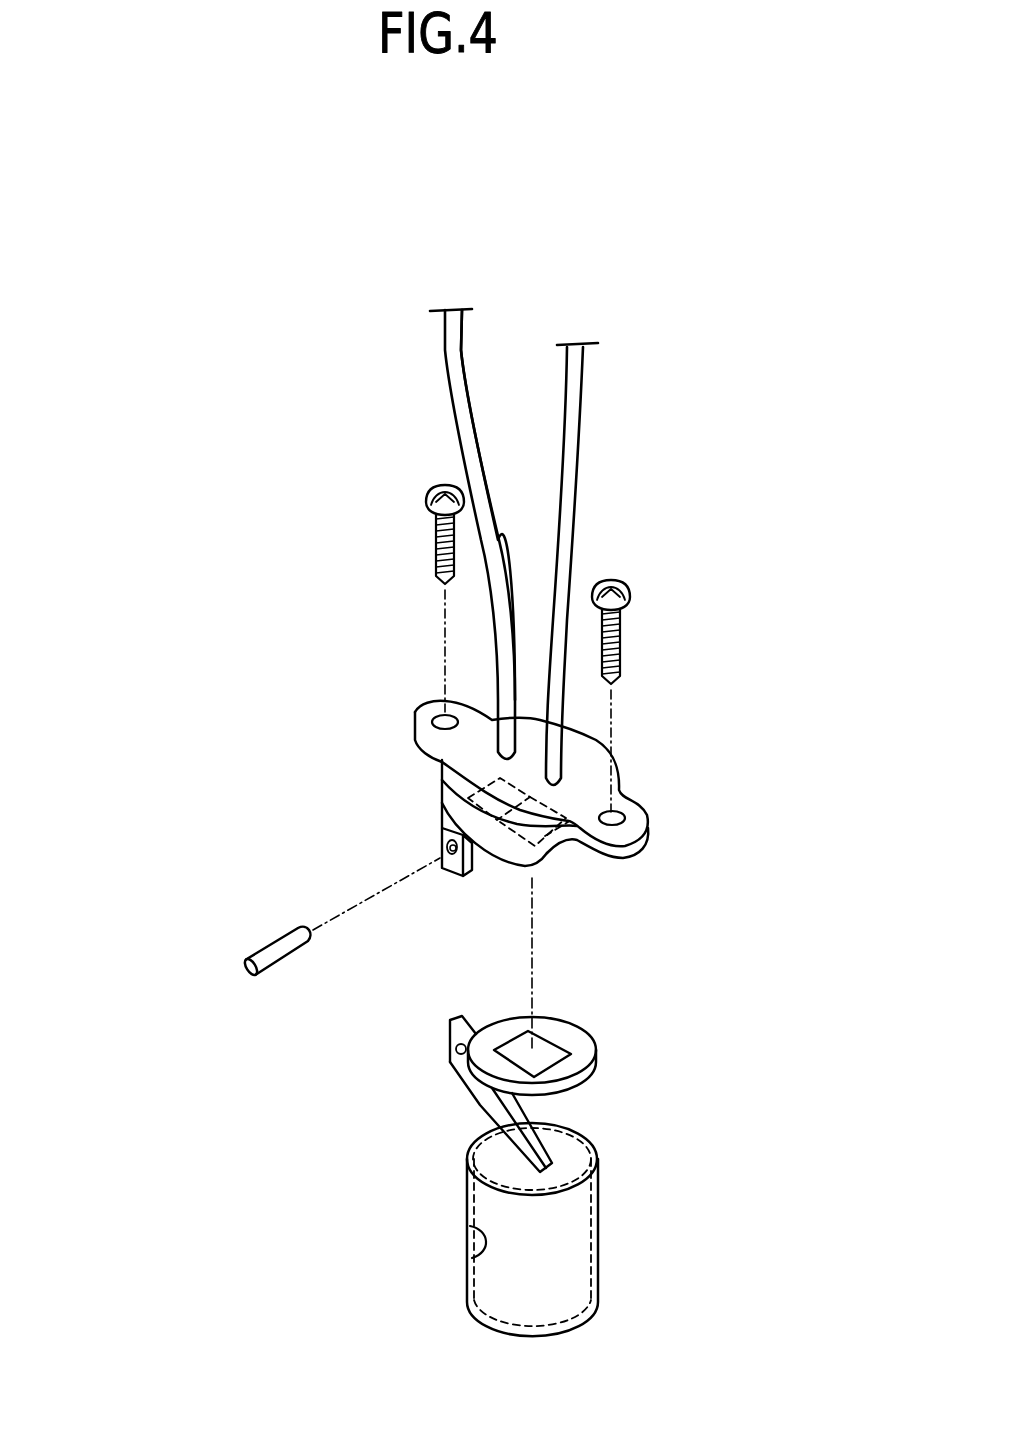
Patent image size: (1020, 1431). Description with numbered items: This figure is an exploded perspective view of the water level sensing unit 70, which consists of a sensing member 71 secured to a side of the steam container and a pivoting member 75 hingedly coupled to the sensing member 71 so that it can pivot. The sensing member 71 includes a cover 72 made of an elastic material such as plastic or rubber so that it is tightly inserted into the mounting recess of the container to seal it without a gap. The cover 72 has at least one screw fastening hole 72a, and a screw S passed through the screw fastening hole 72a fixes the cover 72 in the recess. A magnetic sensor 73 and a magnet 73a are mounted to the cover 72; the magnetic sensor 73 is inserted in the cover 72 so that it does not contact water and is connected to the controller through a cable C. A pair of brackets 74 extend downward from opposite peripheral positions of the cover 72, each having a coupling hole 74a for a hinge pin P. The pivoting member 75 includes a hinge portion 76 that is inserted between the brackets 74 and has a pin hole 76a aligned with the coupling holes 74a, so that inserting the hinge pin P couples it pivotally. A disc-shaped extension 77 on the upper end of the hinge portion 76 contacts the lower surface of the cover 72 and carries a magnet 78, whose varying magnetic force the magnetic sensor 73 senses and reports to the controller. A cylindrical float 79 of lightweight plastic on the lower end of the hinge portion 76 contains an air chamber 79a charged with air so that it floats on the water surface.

The water level sensing unit 70 is at (248, 822).
The sensing member 71 is at (676, 804).
The cover 72 is at (597, 758).
The screw fastening hole 72a is at (425, 706).
The magnetic sensor 73 is at (442, 770).
The magnet 73a is at (550, 838).
The brackets 74 is at (442, 825).
The coupling hole 74a is at (444, 848).
The pivoting member 75 is at (641, 1167).
The hinge portion 76 is at (480, 1100).
The pin hole 76a is at (448, 1050).
The extension 77 is at (577, 1046).
The magnet 78 is at (524, 1037).
The float 79 is at (598, 1245).
The air chamber 79a is at (473, 1258).
The cable C is at (485, 476).
The screw S is at (433, 538).
The hinge pin P is at (276, 947).